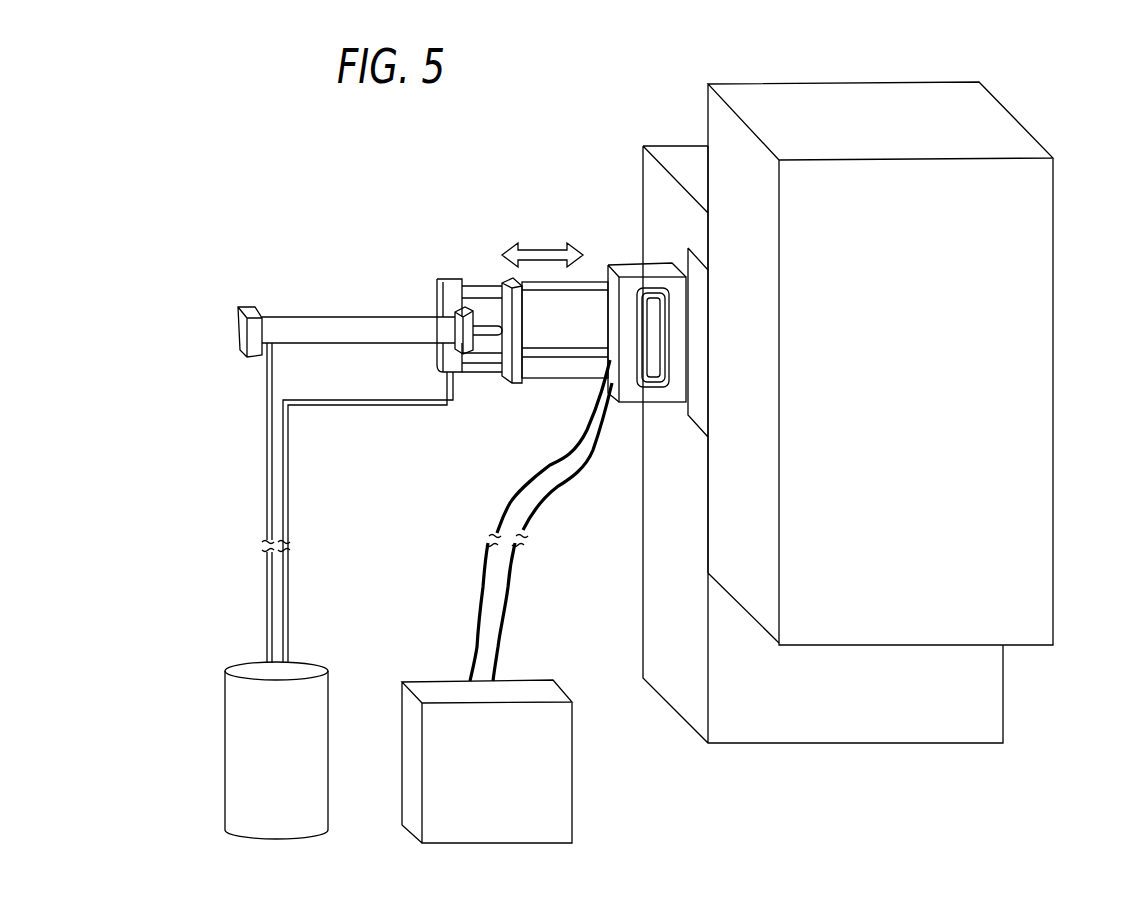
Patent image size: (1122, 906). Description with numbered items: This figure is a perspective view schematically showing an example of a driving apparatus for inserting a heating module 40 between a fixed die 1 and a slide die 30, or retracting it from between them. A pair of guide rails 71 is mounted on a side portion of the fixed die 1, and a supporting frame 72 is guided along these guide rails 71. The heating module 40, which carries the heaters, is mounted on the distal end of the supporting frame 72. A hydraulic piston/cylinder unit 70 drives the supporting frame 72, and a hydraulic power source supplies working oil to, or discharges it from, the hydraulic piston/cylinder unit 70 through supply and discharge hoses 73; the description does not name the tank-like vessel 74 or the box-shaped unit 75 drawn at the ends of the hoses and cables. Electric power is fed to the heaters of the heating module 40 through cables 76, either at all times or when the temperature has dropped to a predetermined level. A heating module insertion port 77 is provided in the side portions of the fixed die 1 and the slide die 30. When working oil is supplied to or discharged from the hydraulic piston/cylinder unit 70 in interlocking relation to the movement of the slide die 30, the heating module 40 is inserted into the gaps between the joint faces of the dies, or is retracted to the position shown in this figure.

The fixed die 1 is at (666, 146).
The slide die 30 is at (983, 333).
The heating module 40 is at (625, 268).
The hydraulic piston/cylinder unit 70 is at (367, 317).
The guide rails 71 is at (475, 287).
The supporting frame 72 is at (533, 380).
The supply and discharge hoses 73 is at (267, 588).
The tank 74 is at (313, 758).
The pump unit 75 is at (555, 755).
The cables 76 is at (483, 590).
The heating module insertion port 77 is at (700, 397).